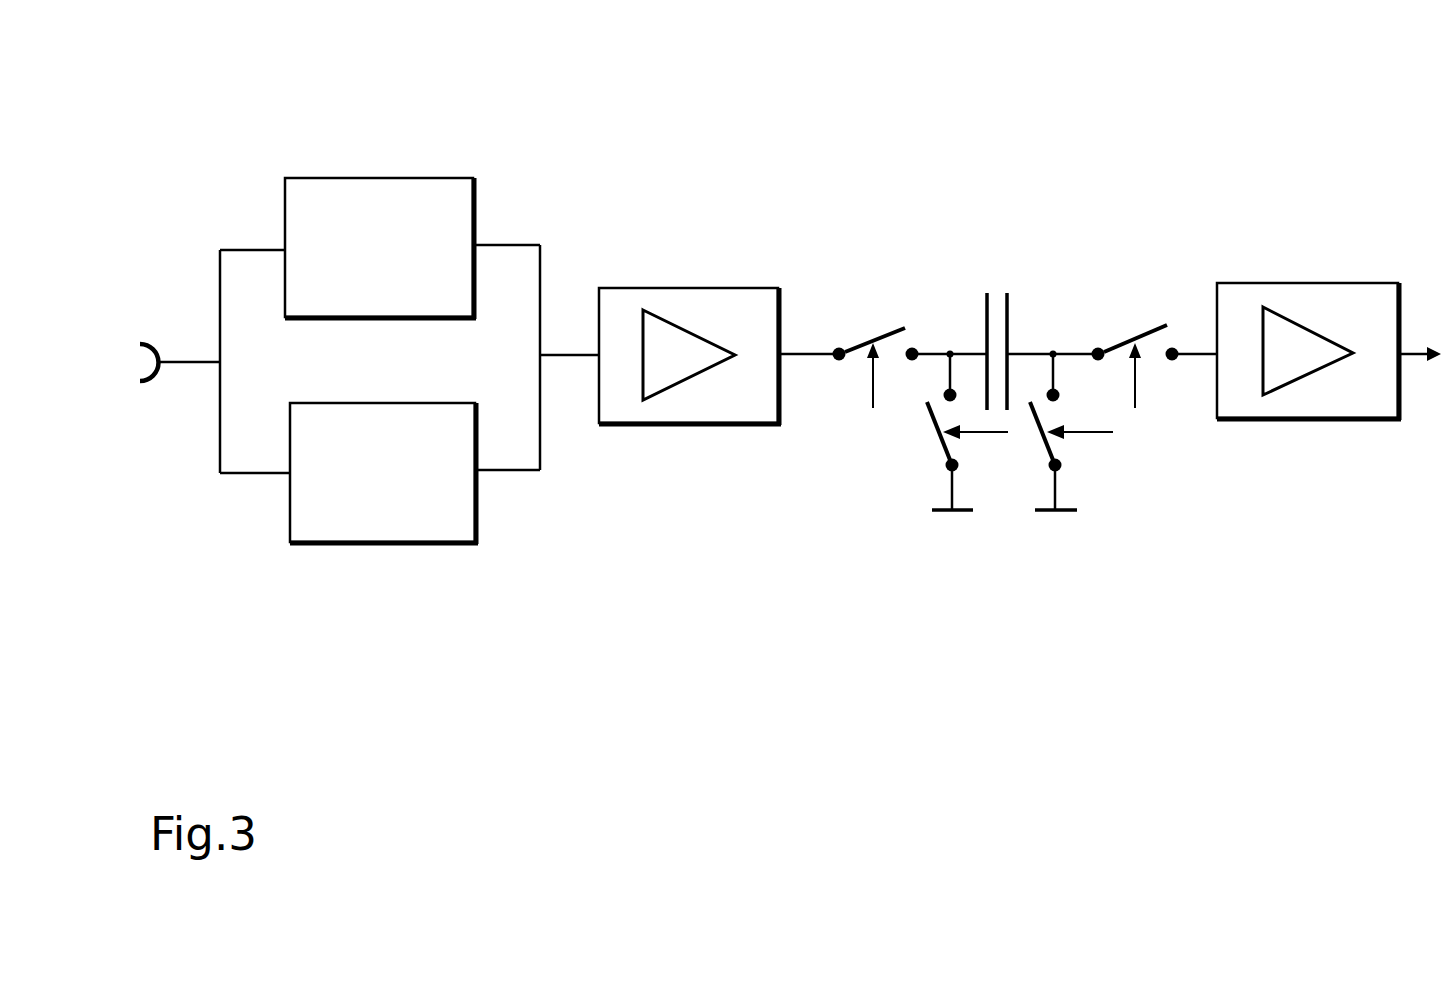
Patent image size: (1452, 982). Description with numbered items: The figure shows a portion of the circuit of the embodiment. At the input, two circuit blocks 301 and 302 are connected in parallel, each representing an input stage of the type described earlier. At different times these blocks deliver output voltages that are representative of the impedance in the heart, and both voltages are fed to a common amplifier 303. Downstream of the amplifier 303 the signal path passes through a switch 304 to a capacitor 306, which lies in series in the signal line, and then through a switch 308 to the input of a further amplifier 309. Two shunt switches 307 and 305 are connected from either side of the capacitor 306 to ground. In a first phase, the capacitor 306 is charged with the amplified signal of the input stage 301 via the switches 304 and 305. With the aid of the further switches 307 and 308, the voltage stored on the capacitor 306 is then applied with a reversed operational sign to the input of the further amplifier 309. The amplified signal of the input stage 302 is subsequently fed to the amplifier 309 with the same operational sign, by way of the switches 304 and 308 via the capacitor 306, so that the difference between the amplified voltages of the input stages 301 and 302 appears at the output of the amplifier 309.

The circuit block (input stage) 301 is at (347, 178).
The circuit block (input stage) 302 is at (357, 542).
The amplifier 303 is at (687, 288).
The switch 304 is at (888, 332).
The switch 305 is at (1030, 412).
The capacitor 306 is at (987, 317).
The switch 307 is at (928, 412).
The switch 308 is at (1150, 327).
The further amplifier 309 is at (1307, 283).